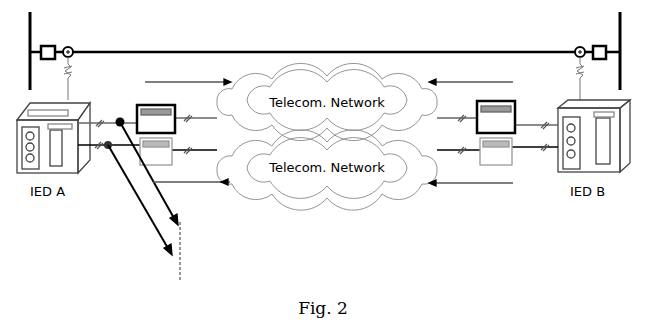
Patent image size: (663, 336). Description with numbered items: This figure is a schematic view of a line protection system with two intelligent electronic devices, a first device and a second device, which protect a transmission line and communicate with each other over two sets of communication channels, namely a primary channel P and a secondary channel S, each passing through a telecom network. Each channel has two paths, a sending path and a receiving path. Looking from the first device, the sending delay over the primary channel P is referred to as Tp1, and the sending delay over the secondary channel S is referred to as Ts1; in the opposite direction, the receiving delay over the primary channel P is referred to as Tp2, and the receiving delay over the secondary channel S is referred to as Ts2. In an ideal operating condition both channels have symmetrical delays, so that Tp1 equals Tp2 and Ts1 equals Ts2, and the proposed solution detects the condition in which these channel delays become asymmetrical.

The sending delay via primary channel Tp1 is at (188, 76).
The receiving delay via primary channel Tp2 is at (471, 76).
The sending delay via secondary channel Ts1 is at (191, 188).
The receiving delay via secondary channel Ts2 is at (471, 189).
The primary channel P is at (190, 236).
The secondary channel S is at (190, 266).